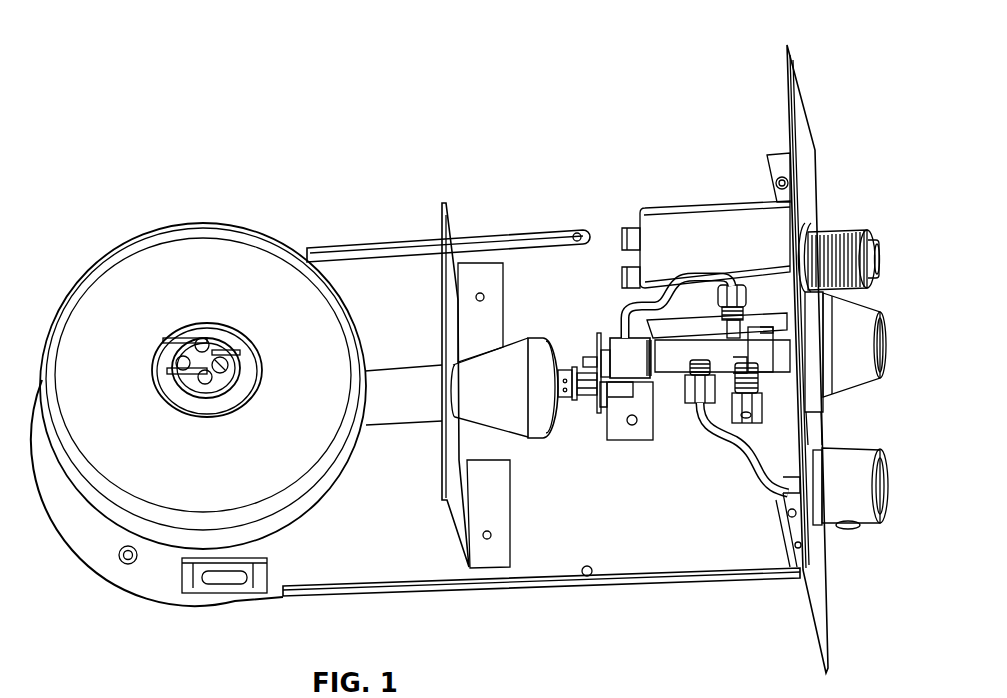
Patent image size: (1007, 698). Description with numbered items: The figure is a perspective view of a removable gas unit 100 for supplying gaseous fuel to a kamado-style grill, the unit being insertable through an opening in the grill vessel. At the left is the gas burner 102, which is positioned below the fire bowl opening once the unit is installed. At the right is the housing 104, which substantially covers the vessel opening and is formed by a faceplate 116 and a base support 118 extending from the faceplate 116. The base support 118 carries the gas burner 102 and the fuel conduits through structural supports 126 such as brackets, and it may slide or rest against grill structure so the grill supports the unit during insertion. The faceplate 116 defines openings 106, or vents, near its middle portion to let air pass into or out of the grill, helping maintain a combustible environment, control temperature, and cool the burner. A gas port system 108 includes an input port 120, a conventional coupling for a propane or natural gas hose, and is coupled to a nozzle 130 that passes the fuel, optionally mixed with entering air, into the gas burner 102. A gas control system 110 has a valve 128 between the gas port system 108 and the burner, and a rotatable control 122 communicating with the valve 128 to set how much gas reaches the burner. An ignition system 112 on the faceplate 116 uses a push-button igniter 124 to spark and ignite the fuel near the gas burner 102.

The removable gas unit 100 is at (746, 38).
The gas burner 102 is at (163, 206).
The housing 104 is at (773, 95).
The openings 106 is at (815, 413).
The gas port system 108 is at (867, 508).
The gas control system 110 is at (866, 303).
The ignition system 112 is at (843, 237).
The faceplate 116 is at (800, 133).
The base support 118 is at (630, 563).
The input port 120 is at (850, 528).
The control 122 is at (867, 347).
The push-button igniter 124 is at (876, 250).
The structural supports 126 is at (189, 585).
The valve 128 is at (676, 357).
The nozzle 130 is at (580, 403).